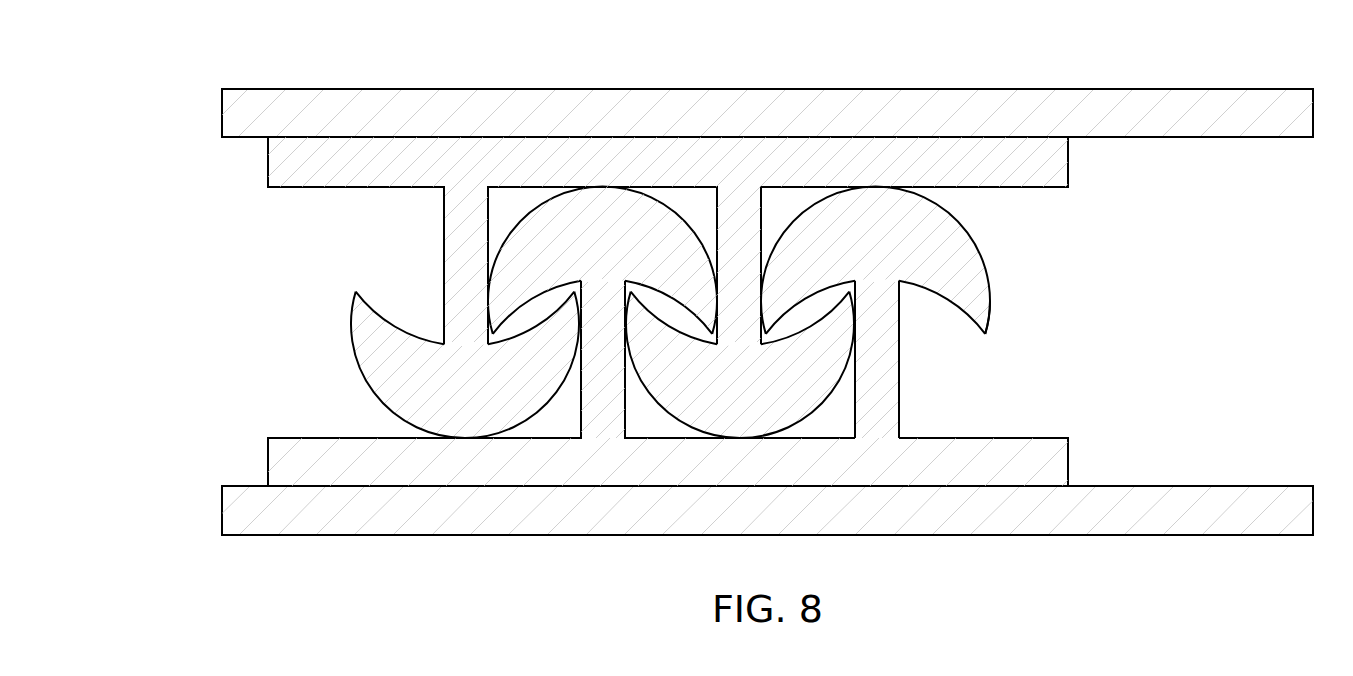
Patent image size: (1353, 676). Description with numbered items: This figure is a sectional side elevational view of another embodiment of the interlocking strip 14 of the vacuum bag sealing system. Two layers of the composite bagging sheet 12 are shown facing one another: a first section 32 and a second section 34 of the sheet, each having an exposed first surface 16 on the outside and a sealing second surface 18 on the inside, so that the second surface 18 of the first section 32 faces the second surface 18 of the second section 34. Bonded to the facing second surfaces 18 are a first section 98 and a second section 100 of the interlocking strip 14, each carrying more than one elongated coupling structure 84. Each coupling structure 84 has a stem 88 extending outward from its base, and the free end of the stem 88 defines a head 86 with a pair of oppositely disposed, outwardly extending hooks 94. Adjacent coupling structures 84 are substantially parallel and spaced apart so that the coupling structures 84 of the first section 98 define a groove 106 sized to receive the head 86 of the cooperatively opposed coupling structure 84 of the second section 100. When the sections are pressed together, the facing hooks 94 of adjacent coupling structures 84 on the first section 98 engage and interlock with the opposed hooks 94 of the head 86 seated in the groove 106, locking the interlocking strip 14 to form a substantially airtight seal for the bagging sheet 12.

The composite bagging sheet 12 is at (764, 312).
The interlocking strip 14 is at (704, 312).
The first surface 16 is at (1150, 88).
The second surface 18 is at (1150, 138).
The first section 32 is at (347, 535).
The second section 34 is at (332, 88).
The coupling structure 84 is at (415, 248).
The head 86 is at (982, 258).
The stem 88 is at (900, 400).
The hook 94 is at (352, 327).
The first section of the interlocking strip 98 is at (626, 428).
The second section of the interlocking strip 100 is at (674, 287).
The groove 106 is at (670, 442).